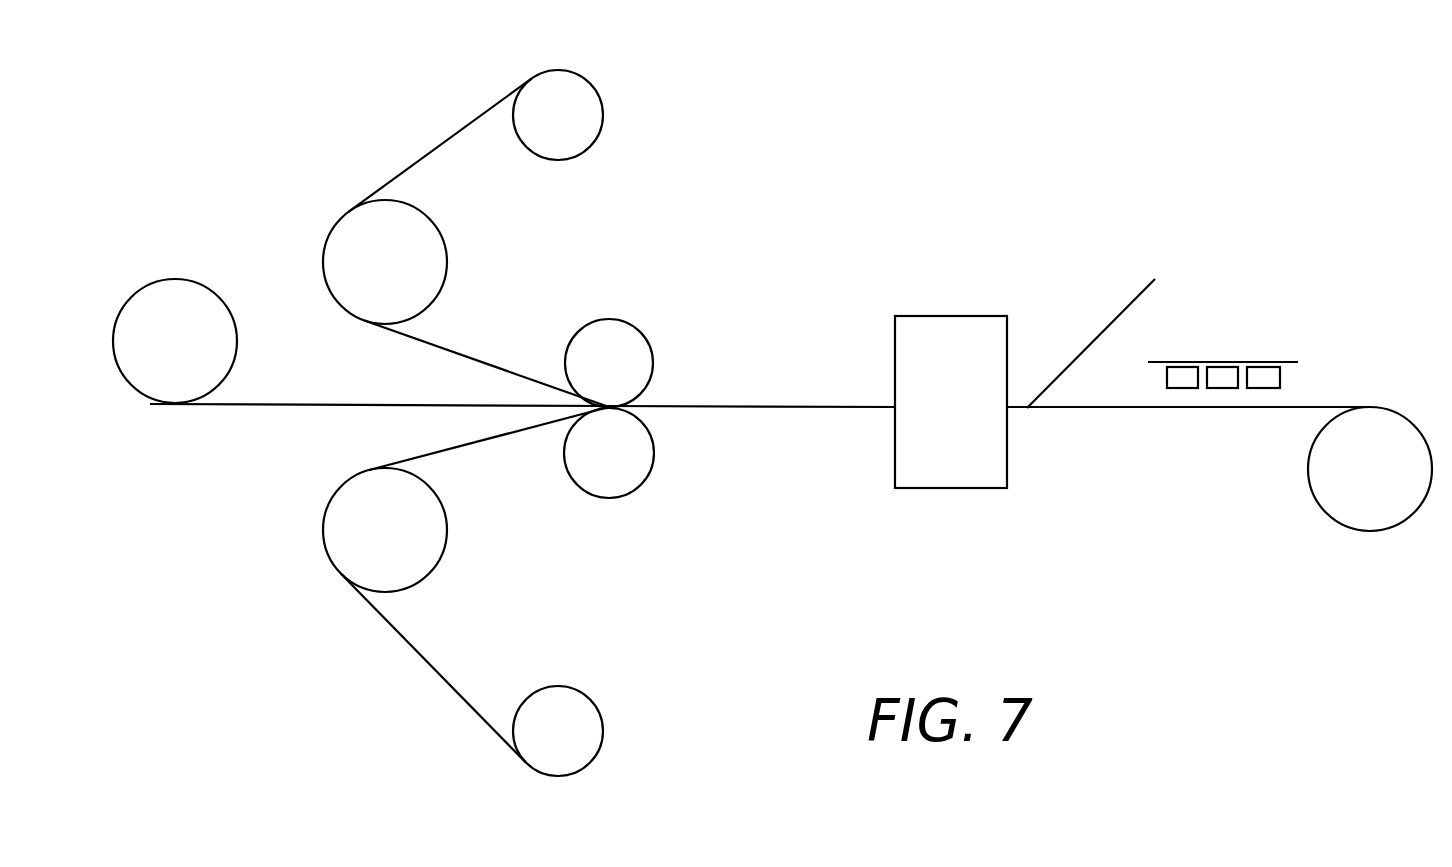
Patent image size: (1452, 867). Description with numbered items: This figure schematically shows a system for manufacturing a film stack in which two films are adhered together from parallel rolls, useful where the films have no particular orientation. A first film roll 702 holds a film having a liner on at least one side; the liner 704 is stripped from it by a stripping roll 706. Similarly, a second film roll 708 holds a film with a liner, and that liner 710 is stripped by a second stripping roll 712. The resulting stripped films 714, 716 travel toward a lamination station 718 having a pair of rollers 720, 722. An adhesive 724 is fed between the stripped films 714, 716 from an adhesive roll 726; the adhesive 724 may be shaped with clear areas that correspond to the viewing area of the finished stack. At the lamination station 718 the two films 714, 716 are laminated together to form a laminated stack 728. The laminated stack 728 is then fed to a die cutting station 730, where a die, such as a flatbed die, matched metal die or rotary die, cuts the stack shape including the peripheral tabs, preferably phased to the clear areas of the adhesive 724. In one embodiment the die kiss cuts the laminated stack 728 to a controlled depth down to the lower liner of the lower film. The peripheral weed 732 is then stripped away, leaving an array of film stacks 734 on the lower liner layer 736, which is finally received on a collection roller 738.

The first film roll 702 is at (428, 215).
The liner 704 is at (430, 150).
The stripping roll 706 is at (594, 83).
The second film roll 708 is at (447, 540).
The liner 710 is at (422, 660).
The second stripping roll 712 is at (604, 733).
The stripped film 714 is at (488, 366).
The stripped film 716 is at (457, 448).
The lamination station 718 is at (654, 354).
The roller 720 is at (660, 385).
The roller 722 is at (637, 489).
The adhesive 724 is at (265, 407).
The adhesive roll 726 is at (178, 278).
The laminated stack 728 is at (790, 412).
The die cutting station 730 is at (950, 490).
The peripheral weed 732 is at (1122, 312).
The array of film stacks 734 is at (1226, 360).
The lower liner layer 736 is at (1200, 410).
The collection roller 738 is at (1347, 529).